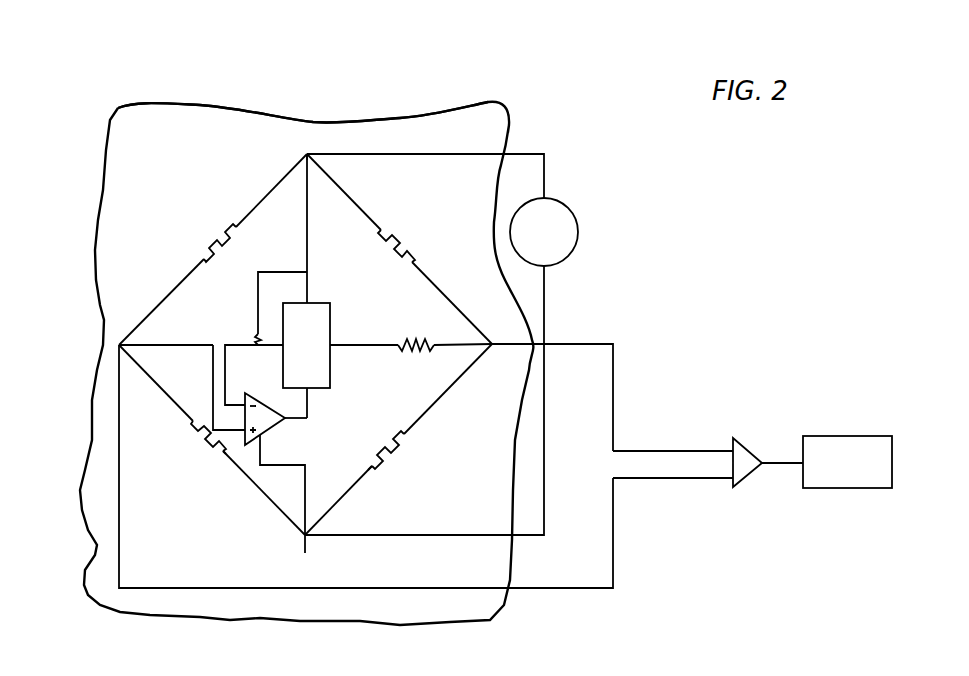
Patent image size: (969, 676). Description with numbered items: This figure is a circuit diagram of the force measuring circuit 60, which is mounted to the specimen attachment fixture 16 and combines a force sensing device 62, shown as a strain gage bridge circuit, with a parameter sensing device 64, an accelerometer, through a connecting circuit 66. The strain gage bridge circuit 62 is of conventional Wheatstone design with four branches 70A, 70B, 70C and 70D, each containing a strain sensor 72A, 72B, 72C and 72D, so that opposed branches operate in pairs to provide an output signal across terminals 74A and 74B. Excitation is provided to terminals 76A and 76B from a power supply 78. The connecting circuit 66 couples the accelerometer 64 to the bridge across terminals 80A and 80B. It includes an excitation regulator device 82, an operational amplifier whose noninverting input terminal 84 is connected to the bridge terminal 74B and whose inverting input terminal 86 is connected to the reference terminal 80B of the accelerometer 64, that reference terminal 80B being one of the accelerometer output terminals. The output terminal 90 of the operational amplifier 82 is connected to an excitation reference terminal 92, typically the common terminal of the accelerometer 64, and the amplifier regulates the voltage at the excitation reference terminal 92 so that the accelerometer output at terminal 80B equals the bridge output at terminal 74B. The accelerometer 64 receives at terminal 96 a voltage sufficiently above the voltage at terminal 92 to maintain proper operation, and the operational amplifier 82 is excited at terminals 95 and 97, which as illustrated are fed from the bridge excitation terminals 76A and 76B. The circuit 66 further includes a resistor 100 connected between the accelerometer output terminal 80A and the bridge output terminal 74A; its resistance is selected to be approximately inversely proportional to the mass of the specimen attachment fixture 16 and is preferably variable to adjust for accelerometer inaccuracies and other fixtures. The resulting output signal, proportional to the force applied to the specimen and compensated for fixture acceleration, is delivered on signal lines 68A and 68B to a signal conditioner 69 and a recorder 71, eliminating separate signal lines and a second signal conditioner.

The specimen attachment fixture 16 is at (385, 625).
The force measuring circuit 60 is at (566, 150).
The force sensing device 62 is at (231, 165).
The parameter sensing device 64 is at (331, 306).
The circuit 66 is at (356, 452).
The signal line 68A is at (665, 451).
The signal line 68B is at (683, 478).
The signal conditioner 69 is at (742, 438).
The branch 70A is at (343, 192).
The branch 70B is at (420, 420).
The branch 70C is at (282, 518).
The branch 70D is at (167, 293).
The recorder 71 is at (845, 436).
The strain sensor 72A is at (448, 211).
The strain sensor 72B is at (399, 447).
The strain sensor 72C is at (196, 430).
The strain sensor 72D is at (222, 236).
The terminal 74A is at (493, 338).
The terminal 74B is at (100, 314).
The terminal 76A is at (309, 152).
The terminal 76B is at (305, 553).
The power supply 78 is at (578, 215).
The output terminal 80A is at (332, 352).
The reference terminal 80B is at (273, 340).
The excitation regulator device 82 is at (278, 430).
The noninverting input terminal 84 is at (237, 463).
The inverting input terminal 86 is at (245, 395).
The output terminal 90 is at (290, 416).
The excitation reference terminal 92 is at (310, 394).
The terminal 95 is at (257, 402).
The terminal 96 is at (308, 292).
The terminal 97 is at (263, 443).
The resistor 100 is at (422, 326).